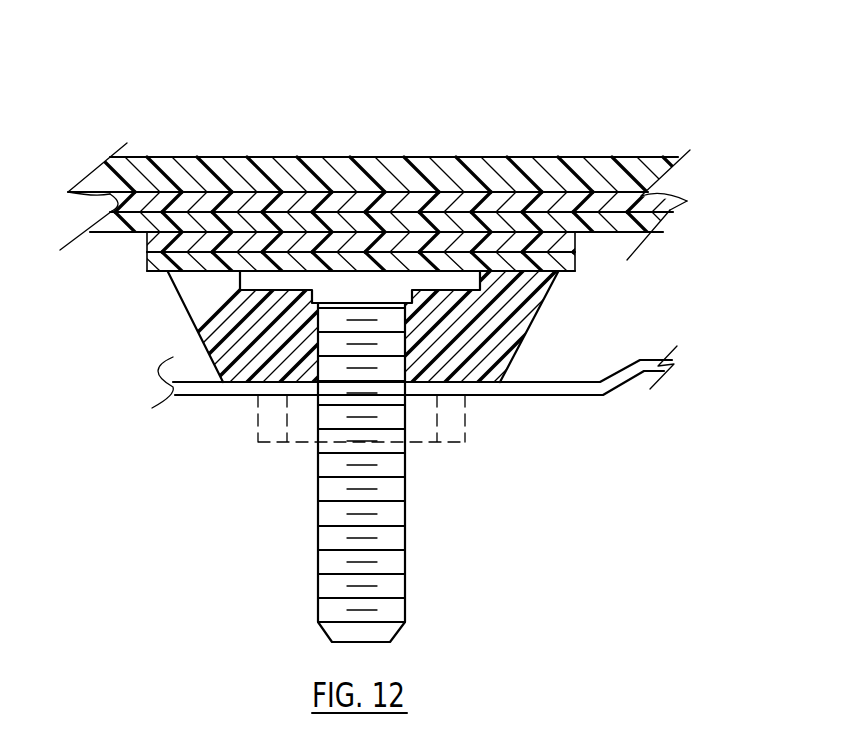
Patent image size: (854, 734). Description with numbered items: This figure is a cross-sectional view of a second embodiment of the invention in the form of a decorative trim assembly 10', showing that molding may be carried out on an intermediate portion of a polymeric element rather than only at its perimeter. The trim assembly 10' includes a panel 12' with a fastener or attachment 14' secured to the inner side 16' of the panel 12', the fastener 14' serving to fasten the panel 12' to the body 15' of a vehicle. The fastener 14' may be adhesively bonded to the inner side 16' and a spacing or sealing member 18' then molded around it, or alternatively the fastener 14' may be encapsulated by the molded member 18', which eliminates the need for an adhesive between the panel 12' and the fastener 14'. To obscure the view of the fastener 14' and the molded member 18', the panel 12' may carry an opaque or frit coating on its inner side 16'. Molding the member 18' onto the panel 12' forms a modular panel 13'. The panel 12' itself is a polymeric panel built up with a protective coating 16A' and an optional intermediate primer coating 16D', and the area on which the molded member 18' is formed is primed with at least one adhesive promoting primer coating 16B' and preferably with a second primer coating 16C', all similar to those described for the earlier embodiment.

The decorative trim assembly 10' is at (419, 337).
The panel 12' is at (395, 150).
The modular panel 13' is at (419, 198).
The fastener 14' is at (428, 472).
The body 15' is at (414, 411).
The inner side 16' is at (419, 207).
The protective coating 16A' is at (396, 248).
The adhesive promoting primer coating 16B' is at (389, 264).
The second primer coating 16C' is at (381, 290).
The intermediate primer coating 16D' is at (444, 220).
The molded member 18' is at (443, 326).